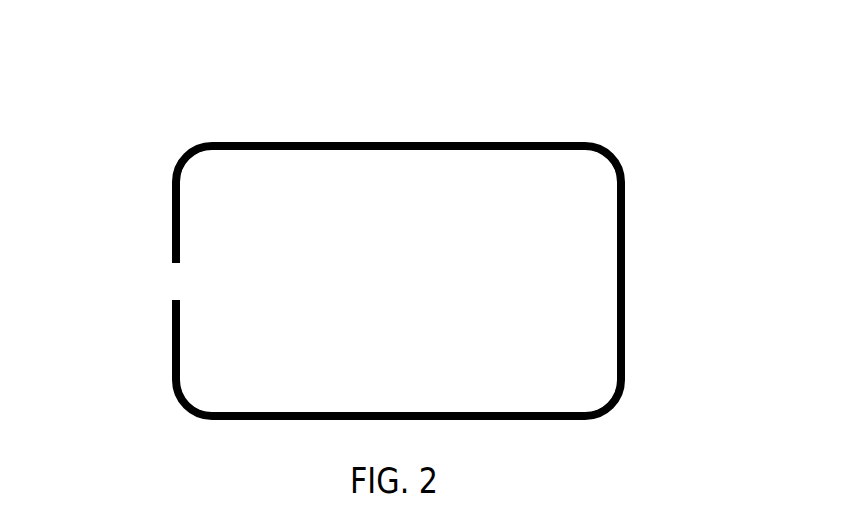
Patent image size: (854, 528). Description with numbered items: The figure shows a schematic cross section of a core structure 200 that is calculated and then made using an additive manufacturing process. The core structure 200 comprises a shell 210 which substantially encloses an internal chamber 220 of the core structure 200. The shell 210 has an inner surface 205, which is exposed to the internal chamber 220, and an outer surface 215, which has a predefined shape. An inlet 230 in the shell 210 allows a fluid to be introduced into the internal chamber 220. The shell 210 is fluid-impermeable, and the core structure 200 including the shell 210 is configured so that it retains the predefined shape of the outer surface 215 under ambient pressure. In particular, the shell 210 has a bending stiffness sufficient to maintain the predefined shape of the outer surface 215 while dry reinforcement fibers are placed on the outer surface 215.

The core structure 200 is at (397, 232).
The inner surface 205 is at (457, 153).
The shell 210 is at (398, 142).
The outer surface 215 is at (303, 140).
The internal chamber 220 is at (530, 313).
The inlet 230 is at (174, 279).